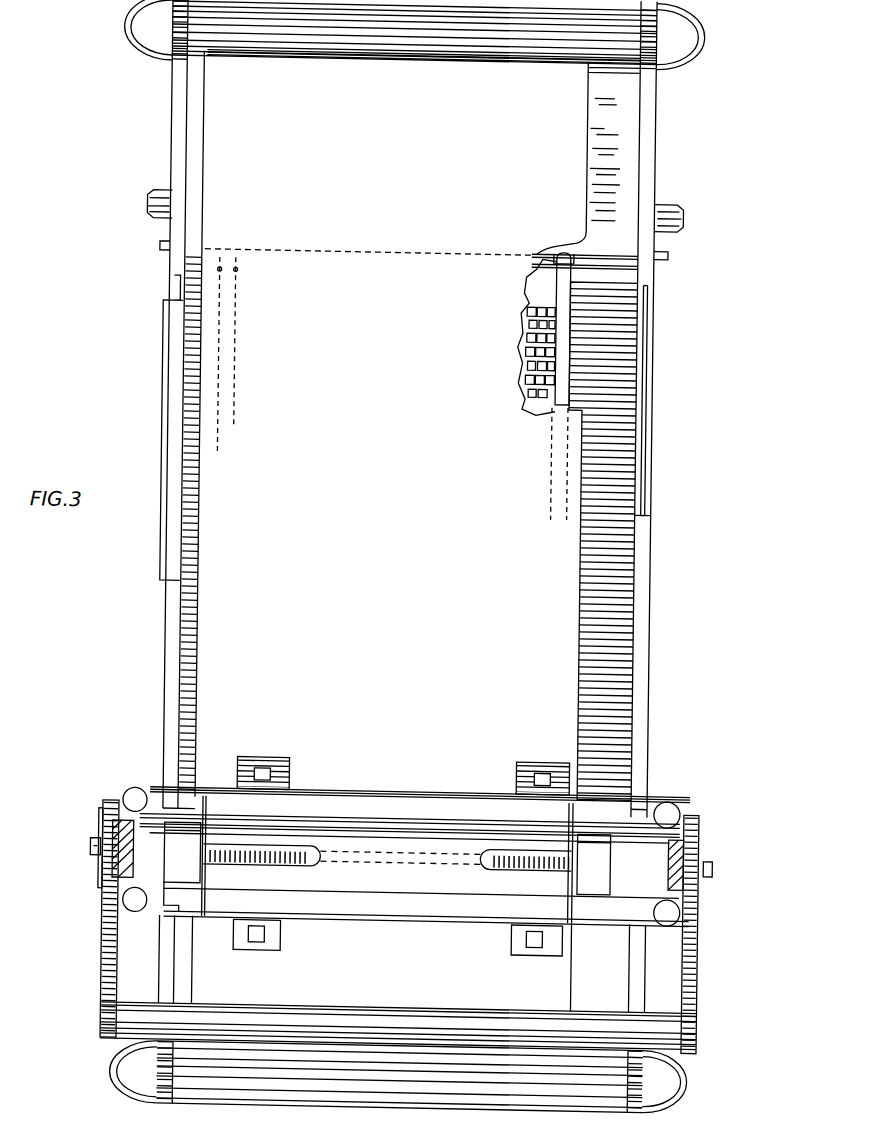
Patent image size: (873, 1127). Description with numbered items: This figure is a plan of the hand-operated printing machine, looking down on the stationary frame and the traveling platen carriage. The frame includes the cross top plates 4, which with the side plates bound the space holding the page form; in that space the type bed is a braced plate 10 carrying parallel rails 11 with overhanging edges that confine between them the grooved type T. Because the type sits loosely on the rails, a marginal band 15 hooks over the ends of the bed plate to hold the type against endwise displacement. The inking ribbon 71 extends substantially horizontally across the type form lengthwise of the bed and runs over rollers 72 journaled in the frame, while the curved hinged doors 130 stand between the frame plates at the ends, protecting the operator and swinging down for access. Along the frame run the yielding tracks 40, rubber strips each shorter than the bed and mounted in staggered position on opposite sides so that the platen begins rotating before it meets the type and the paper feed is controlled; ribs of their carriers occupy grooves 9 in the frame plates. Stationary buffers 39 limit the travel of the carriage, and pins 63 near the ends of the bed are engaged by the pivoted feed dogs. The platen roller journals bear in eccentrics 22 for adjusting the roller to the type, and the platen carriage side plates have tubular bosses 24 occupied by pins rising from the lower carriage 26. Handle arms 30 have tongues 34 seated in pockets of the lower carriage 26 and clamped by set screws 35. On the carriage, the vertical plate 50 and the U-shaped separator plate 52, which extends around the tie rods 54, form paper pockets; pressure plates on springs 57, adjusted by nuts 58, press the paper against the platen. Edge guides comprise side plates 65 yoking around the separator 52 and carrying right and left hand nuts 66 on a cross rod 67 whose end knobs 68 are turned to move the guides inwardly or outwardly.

The curved hinged door 130 is at (447, 32).
The roller 72 is at (598, 64).
The cross top plate 4 is at (579, 163).
The inking ribbon 71 is at (421, 256).
The braced plate 10 is at (585, 271).
The marginal band 15 is at (552, 397).
The type T is at (530, 350).
The rail 11 is at (620, 418).
The groove 9 is at (652, 477).
The yielding track 40 is at (170, 420).
The buffer 39 is at (150, 206).
The pin 63 is at (163, 245).
The tie rod 54 is at (405, 787).
The U-shaped separator plate 52 is at (409, 855).
The rod 67 is at (320, 860).
The vertical plate 50 is at (406, 917).
The right and left hand nut 66 is at (388, 858).
The side plate 65 is at (217, 872).
The spring 57 is at (300, 777).
The nut 58 is at (292, 940).
The tubular boss 24 is at (683, 806).
The arm 30 is at (113, 932).
The lower carriage 26 is at (110, 878).
The eccentric 22 is at (123, 862).
The set screw 35 is at (101, 848).
The knob 68 is at (705, 866).
The tongue 34 is at (435, 1003).